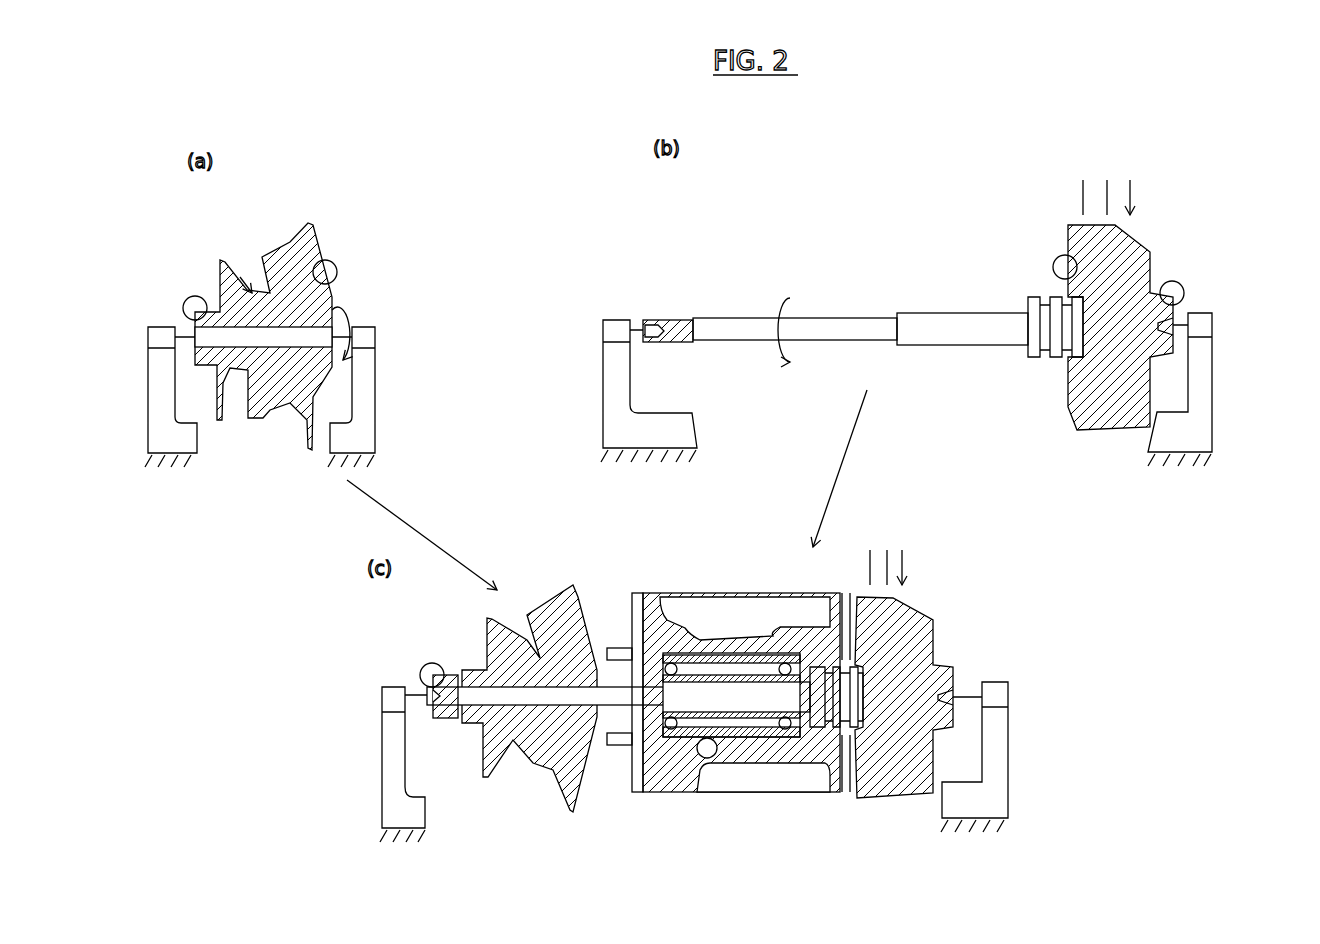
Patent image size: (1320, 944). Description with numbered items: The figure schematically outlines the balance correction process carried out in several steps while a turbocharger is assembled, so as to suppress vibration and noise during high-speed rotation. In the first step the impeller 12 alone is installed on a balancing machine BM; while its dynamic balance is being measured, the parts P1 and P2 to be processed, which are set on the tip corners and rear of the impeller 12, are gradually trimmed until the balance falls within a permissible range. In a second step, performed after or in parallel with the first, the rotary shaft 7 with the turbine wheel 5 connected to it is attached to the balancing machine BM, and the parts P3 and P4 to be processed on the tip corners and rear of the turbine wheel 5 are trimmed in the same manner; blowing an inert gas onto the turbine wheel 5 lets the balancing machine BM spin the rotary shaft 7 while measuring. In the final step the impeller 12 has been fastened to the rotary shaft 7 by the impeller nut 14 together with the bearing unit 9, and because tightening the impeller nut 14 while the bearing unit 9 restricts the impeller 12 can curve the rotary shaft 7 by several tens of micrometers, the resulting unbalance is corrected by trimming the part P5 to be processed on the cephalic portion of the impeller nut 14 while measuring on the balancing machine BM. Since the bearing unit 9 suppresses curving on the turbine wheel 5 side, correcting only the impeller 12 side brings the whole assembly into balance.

The turbine wheel 5 is at (1130, 258).
The rotary shaft 7 is at (937, 320).
The bearing unit 9 is at (700, 650).
The impeller 12 is at (227, 263).
The impeller nut 14 is at (445, 673).
The balancing machine BM is at (378, 377).
The part to be processed P1 is at (183, 305).
The part to be processed P2 is at (337, 268).
The part to be processed P3 is at (1178, 283).
The part to be processed P4 is at (1053, 265).
The part to be processed P5 is at (420, 668).